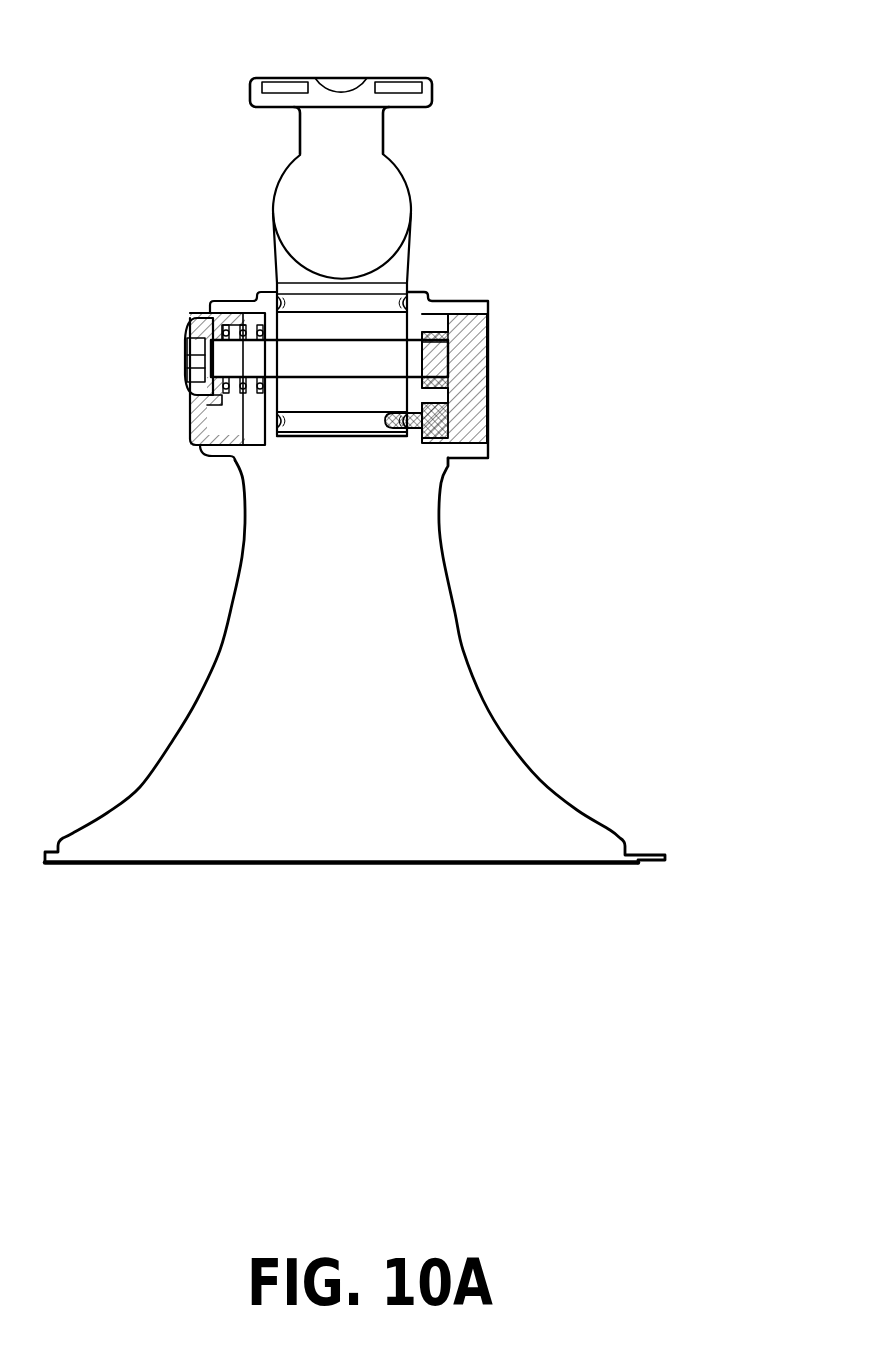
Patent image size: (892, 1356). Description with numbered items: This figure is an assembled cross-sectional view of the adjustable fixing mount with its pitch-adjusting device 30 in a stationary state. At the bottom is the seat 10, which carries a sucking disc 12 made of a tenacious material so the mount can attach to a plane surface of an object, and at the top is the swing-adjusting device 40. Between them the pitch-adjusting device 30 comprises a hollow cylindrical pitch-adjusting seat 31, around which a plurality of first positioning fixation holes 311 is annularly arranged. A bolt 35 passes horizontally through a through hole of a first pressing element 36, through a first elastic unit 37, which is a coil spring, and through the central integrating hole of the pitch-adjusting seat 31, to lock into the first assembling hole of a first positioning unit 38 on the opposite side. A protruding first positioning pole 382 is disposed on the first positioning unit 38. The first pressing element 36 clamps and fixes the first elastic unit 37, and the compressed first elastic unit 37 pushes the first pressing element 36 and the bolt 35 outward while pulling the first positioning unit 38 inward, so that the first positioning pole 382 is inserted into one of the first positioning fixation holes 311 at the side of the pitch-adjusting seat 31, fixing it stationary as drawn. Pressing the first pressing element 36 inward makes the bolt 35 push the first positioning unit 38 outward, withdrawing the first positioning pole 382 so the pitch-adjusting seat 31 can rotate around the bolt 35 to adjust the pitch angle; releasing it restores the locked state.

The seat 10 is at (243, 607).
The sucking disc 12 is at (650, 852).
The pitch-adjusting device 30 is at (493, 320).
The pitch-adjusting seat 31 is at (388, 328).
The first positioning fixation holes 311 is at (380, 302).
The bolt 35 is at (227, 372).
The first pressing element 36 is at (200, 321).
The first elastic unit 37 is at (242, 325).
The first positioning unit 38 is at (470, 370).
The first positioning pole 382 is at (405, 436).
The swing-adjusting device 40 is at (445, 83).